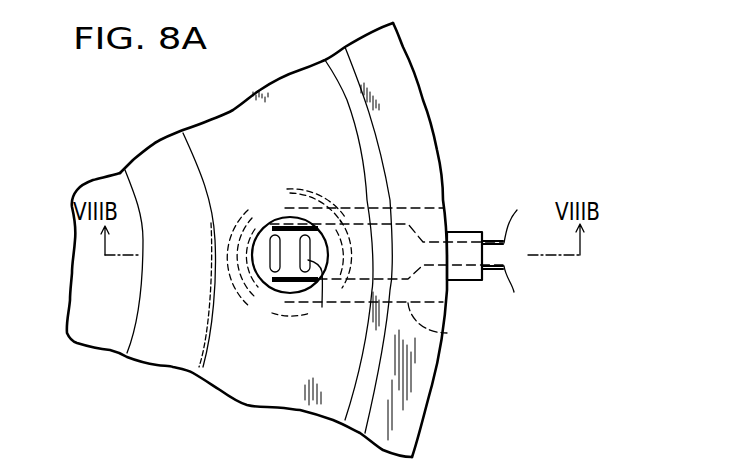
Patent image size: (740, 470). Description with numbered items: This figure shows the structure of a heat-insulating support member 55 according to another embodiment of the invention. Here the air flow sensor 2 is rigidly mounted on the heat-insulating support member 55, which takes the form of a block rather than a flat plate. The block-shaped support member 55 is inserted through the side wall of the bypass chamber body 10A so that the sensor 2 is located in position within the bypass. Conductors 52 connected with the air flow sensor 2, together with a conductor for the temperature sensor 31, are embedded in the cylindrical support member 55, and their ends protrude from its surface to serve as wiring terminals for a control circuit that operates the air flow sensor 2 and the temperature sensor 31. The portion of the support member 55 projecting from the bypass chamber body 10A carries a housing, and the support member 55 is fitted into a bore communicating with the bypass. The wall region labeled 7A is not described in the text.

The reflector housing 7A is at (157, 155).
The bypass chamber body 10A is at (425, 383).
The heat-insulating support member 55 is at (447, 333).
The air flow sensor 2 is at (270, 260).
The conductor 52 is at (282, 226).
The temperature sensor 31 is at (321, 297).